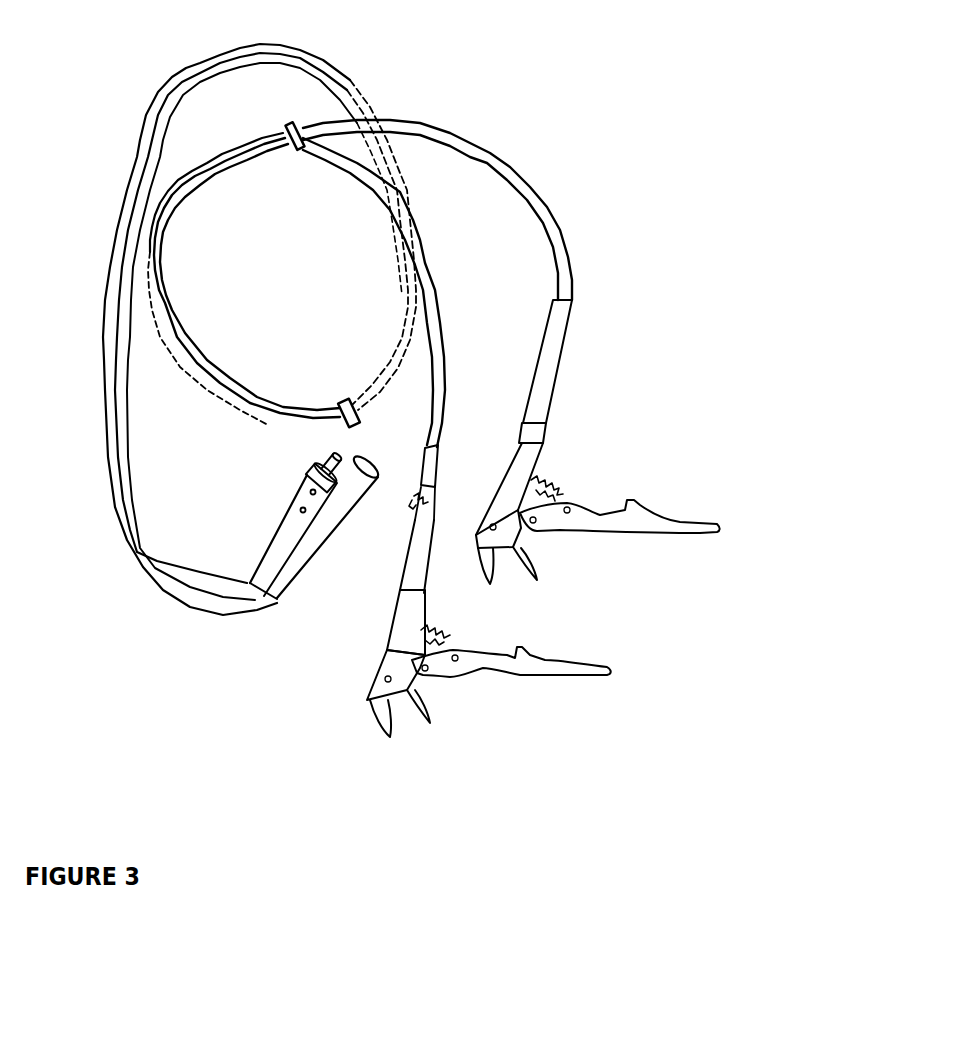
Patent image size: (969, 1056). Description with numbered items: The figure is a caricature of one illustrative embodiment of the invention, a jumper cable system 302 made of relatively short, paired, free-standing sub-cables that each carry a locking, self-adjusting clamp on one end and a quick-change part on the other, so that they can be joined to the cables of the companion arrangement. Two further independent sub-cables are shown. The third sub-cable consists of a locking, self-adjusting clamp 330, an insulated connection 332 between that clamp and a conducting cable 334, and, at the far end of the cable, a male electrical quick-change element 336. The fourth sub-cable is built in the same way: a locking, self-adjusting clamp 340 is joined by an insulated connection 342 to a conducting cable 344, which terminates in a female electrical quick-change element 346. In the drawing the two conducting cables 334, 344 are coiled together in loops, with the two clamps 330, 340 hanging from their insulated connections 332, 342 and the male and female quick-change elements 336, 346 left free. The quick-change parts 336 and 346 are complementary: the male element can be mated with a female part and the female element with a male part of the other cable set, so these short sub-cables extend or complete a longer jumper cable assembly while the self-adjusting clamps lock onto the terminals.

The coiled cable assembly 302 is at (300, 130).
The conducting cable 334 is at (482, 152).
The insulated connection 332 is at (562, 326).
The locking, self-adjusting clamp 330 is at (570, 523).
The conducting cable 344 is at (437, 379).
The insulated connection 342 is at (436, 437).
The locking, self-adjusting clamp 340 is at (470, 665).
The male electrical quick-change element 336 is at (327, 530).
The female electrical quick-change element 346 is at (300, 500).